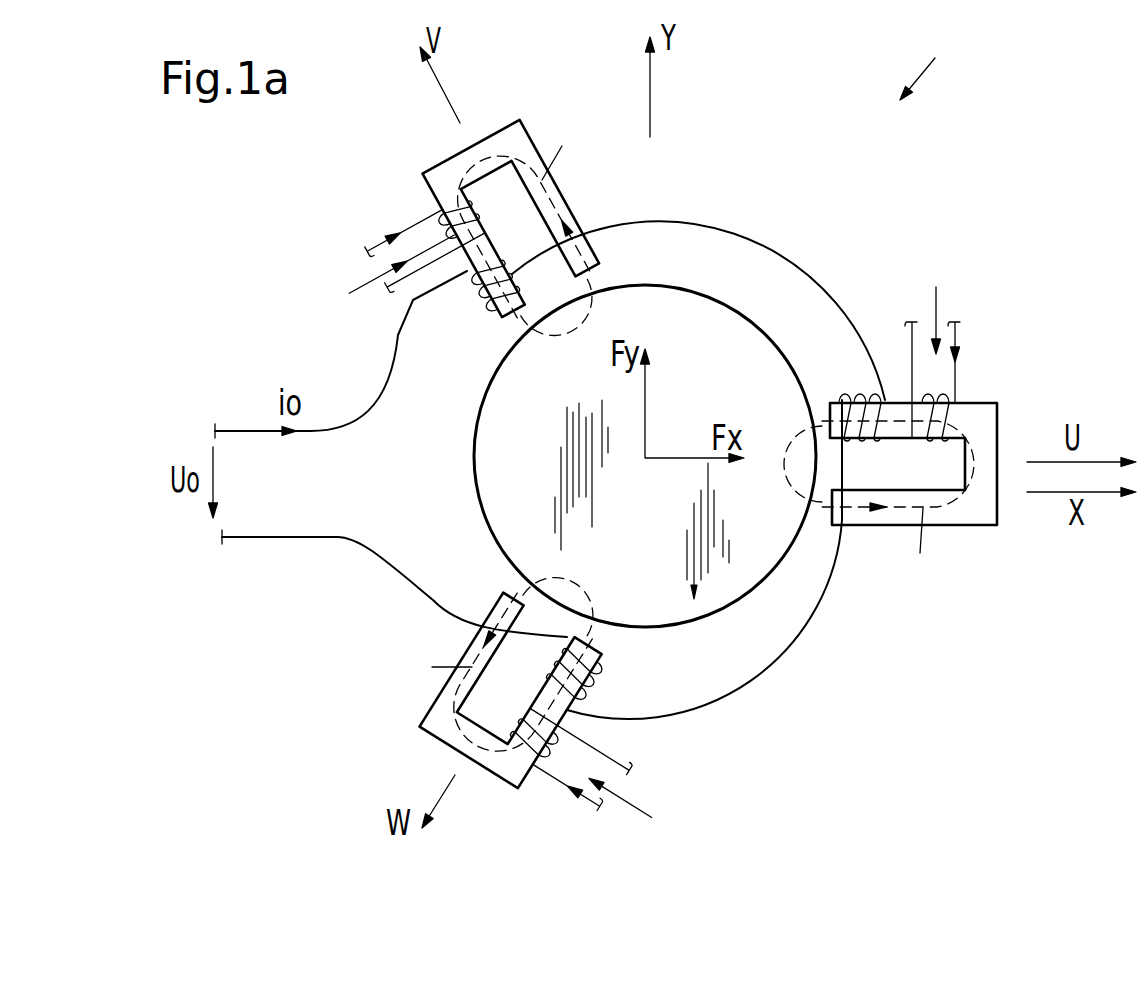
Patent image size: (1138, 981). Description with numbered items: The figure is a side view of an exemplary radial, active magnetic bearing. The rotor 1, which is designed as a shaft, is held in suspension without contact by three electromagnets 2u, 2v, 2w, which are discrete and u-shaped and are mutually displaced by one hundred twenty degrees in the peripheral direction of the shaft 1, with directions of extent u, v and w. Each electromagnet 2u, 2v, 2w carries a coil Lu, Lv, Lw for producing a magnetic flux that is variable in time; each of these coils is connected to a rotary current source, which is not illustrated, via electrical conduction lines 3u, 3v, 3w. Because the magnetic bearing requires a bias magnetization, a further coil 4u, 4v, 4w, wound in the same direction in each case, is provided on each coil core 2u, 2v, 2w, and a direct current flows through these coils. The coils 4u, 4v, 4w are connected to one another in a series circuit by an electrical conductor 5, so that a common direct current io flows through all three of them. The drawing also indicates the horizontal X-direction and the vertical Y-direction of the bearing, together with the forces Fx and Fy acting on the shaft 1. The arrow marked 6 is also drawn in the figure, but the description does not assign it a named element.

The rotor 1 is at (743, 338).
The electromagnet 2u is at (980, 418).
The electromagnet 2v is at (498, 158).
The electromagnet 2w is at (495, 767).
The electrical conduction line 3u is at (958, 323).
The electrical conduction line 3v is at (433, 225).
The electrical conduction line 3w is at (603, 800).
The coil 4u is at (850, 397).
The coil 4v is at (487, 292).
The coil 4w is at (590, 680).
The electrical conductor 5 is at (362, 418).
The direction arrow 6 is at (929, 61).